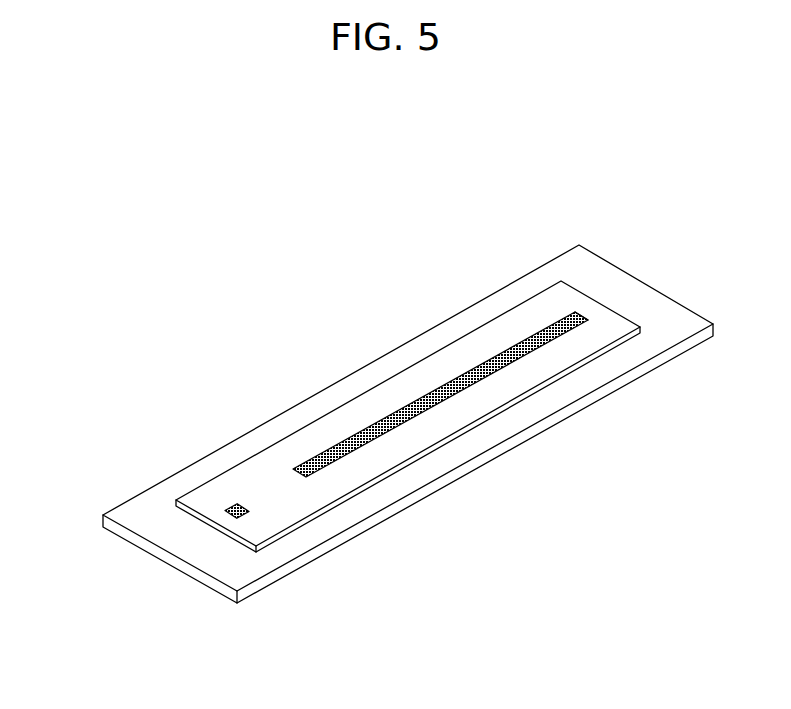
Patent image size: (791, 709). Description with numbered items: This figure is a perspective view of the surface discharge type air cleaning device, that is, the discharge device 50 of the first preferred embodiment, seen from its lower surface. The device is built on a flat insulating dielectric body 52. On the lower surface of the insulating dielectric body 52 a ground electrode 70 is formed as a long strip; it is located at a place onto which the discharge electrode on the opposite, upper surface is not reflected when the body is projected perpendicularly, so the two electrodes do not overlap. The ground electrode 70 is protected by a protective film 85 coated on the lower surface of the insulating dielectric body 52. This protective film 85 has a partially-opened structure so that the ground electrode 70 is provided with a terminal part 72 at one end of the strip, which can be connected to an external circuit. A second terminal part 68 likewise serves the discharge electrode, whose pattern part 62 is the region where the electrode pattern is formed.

The discharge device 50 is at (143, 474).
The insulating dielectric body 52 is at (185, 543).
The pattern part 62 is at (338, 478).
The terminal part 68 is at (237, 518).
The ground electrode 70 is at (349, 435).
The terminal part 72 is at (587, 320).
The protective film 85 is at (458, 352).